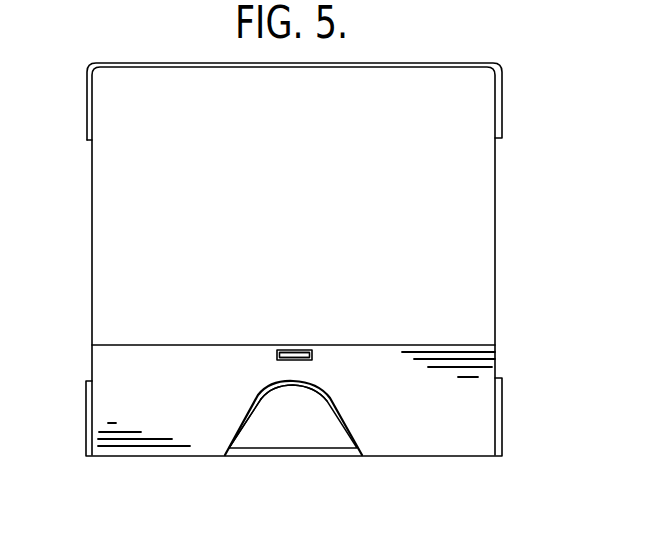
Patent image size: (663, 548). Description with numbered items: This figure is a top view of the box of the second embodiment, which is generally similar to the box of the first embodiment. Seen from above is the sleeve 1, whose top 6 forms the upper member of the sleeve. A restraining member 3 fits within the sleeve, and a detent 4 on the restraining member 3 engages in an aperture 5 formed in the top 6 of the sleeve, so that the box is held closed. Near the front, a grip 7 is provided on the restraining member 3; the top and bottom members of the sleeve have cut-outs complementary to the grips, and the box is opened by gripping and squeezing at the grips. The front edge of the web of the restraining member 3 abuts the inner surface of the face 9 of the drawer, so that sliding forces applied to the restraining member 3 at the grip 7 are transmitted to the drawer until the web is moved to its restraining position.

The sleeve 1 is at (497, 252).
The restraining member 3 is at (302, 428).
The detent 4 is at (305, 352).
The aperture 5 is at (282, 349).
The top of the sleeve 6 is at (150, 285).
The grip 7 is at (270, 425).
The face 9 is at (352, 450).